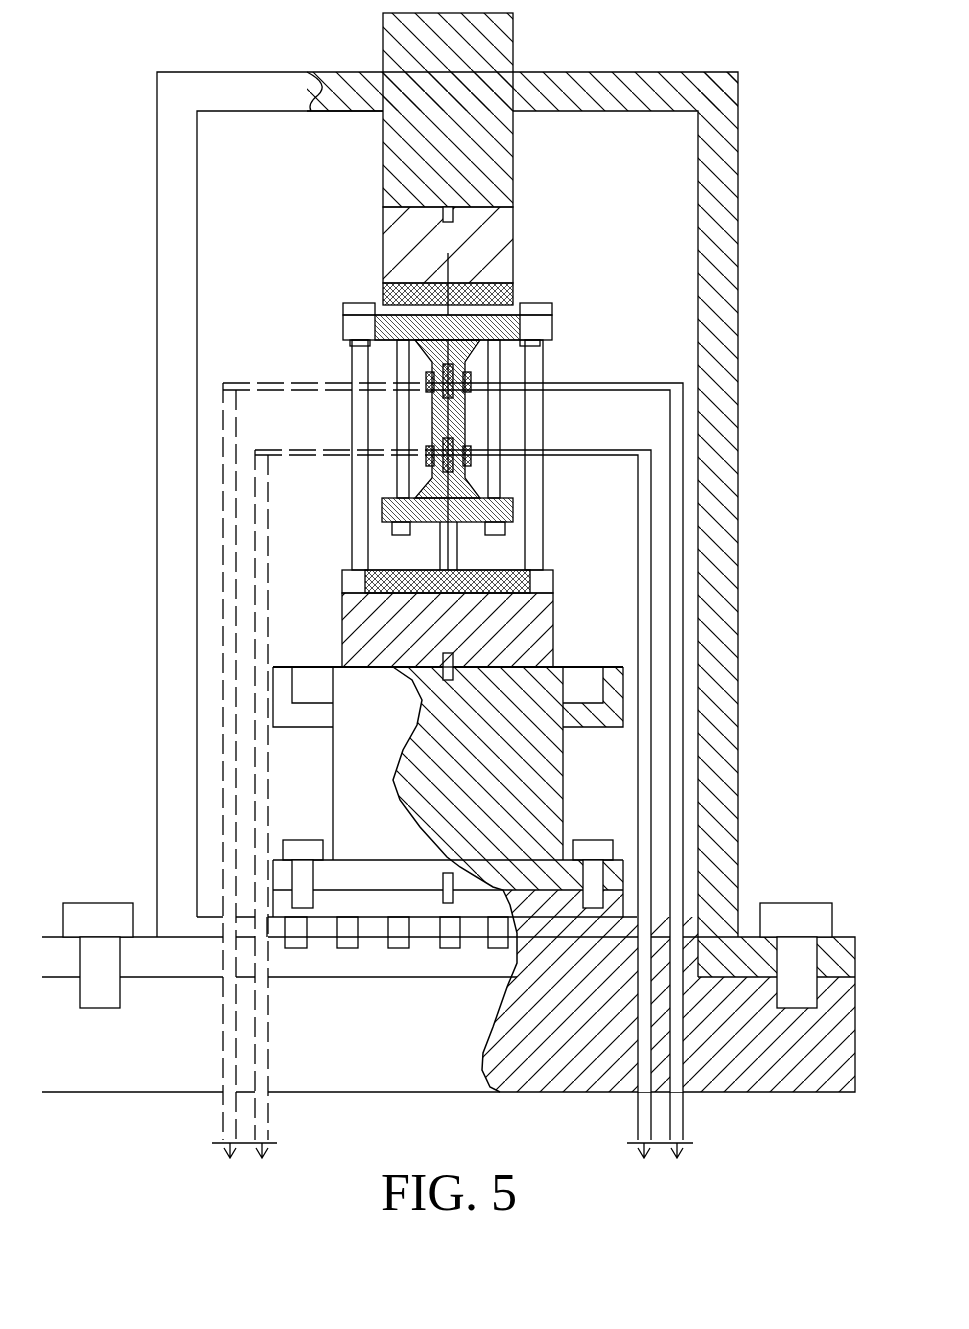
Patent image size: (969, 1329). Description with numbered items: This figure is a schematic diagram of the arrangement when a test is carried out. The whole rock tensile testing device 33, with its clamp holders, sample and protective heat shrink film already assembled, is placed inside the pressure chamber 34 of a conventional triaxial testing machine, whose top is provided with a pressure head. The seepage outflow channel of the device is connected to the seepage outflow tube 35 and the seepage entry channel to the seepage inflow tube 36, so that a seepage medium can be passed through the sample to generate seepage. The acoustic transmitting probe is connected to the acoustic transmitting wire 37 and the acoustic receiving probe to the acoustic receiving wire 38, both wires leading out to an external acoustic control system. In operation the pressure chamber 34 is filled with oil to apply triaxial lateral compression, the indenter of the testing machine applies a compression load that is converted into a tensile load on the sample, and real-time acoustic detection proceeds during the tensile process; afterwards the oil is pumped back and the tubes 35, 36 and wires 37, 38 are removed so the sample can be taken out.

The rock tensile testing device 33 is at (533, 307).
The pressure chamber 34 is at (710, 317).
The seepage outflow tube 35 is at (588, 383).
The seepage inflow tube 36 is at (588, 448).
The acoustic transmitting wire 37 is at (273, 385).
The acoustic receiving wire 38 is at (270, 452).